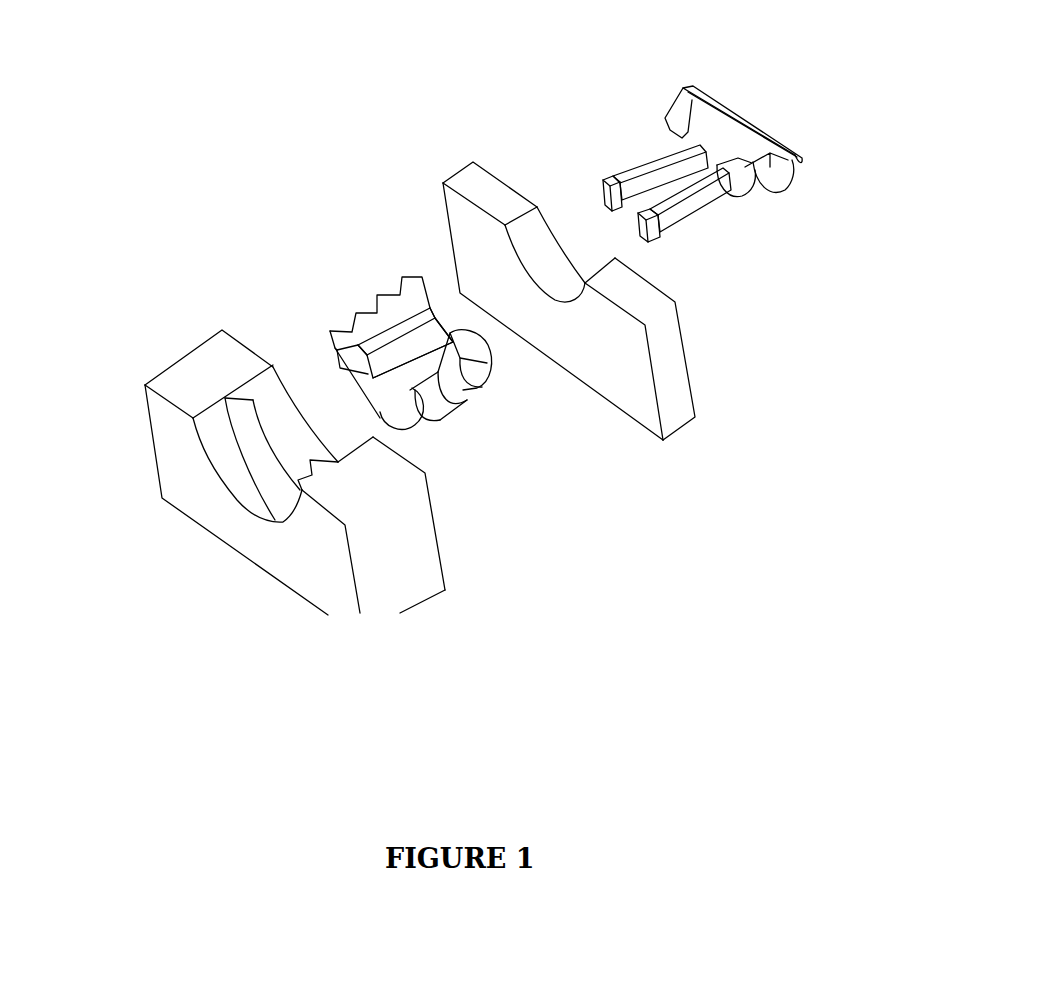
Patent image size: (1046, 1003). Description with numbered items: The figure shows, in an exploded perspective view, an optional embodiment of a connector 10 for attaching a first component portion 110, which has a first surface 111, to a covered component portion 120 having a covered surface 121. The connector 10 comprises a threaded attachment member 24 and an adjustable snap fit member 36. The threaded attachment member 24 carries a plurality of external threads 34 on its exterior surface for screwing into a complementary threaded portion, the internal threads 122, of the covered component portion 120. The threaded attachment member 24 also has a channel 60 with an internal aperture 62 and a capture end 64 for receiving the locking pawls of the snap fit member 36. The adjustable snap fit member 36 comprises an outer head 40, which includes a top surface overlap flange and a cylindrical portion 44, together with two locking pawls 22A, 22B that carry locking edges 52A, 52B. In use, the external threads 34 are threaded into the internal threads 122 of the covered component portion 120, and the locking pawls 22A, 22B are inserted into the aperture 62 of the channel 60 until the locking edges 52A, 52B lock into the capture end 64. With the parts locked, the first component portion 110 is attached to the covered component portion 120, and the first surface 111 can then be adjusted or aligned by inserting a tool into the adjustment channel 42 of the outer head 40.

The connector 10 is at (187, 142).
The covered component portion 120 is at (153, 334).
The covered surface 121 is at (403, 448).
The internal threads 122 is at (302, 468).
The first component portion 110 is at (448, 145).
The first surface 111 is at (633, 260).
The threaded attachment member 24 is at (360, 258).
The channel 60 is at (395, 350).
The internal aperture 62 is at (445, 316).
The capture end 64 is at (382, 388).
The external threads 34 is at (440, 415).
The adjustable snap fit member 36 is at (762, 105).
The outer head 40 is at (680, 90).
The adjustment channel 42 is at (750, 123).
The locking pawl 22A is at (652, 153).
The locking pawl 22B is at (690, 198).
The locking edge 52A is at (610, 182).
The locking edge 52B is at (660, 227).
The cylindrical portion 44 is at (740, 187).